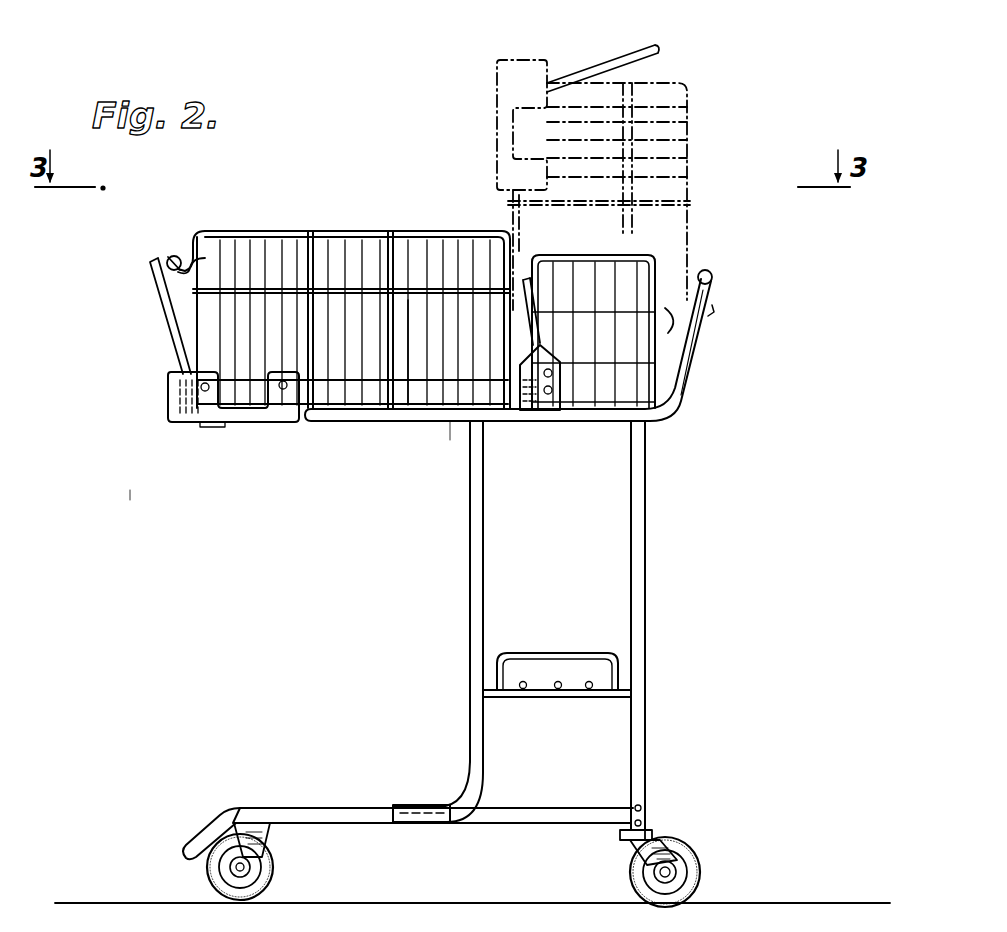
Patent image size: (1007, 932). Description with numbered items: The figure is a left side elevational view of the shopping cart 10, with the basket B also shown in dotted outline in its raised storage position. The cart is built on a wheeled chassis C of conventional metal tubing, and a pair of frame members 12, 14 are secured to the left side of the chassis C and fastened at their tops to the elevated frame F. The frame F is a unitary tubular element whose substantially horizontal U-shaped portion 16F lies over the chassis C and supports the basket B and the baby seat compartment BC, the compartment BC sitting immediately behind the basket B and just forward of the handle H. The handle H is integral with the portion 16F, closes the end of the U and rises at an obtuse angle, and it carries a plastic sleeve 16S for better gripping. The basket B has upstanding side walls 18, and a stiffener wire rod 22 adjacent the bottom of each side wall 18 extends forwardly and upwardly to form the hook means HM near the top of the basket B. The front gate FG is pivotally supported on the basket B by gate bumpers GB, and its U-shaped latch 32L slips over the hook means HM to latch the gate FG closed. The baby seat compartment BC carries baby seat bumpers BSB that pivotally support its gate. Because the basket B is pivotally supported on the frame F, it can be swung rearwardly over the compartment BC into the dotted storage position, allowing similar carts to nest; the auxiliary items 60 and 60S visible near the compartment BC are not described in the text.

The shopping cart 10 is at (138, 486).
The frame member 12 is at (646, 583).
The frame member 14 is at (471, 608).
The U-shaped portion 16F is at (334, 421).
The plastic sleeve 16S is at (709, 266).
The side wall 18 is at (440, 230).
The stiffener wire rod 22 is at (423, 385).
The auxiliary basket 60 is at (582, 273).
The auxiliary basket support 60S is at (670, 325).
The basket B is at (255, 208).
The baby seat compartment BC is at (660, 259).
The baby seat bumper BSB is at (533, 407).
The wheeled chassis C is at (380, 838).
The elevated frame F is at (450, 452).
The front gate FG is at (160, 304).
The gate bumper GB is at (172, 405).
The handle H is at (725, 280).
The hook means HM is at (177, 247).
The U-shaped latch 32L is at (162, 256).